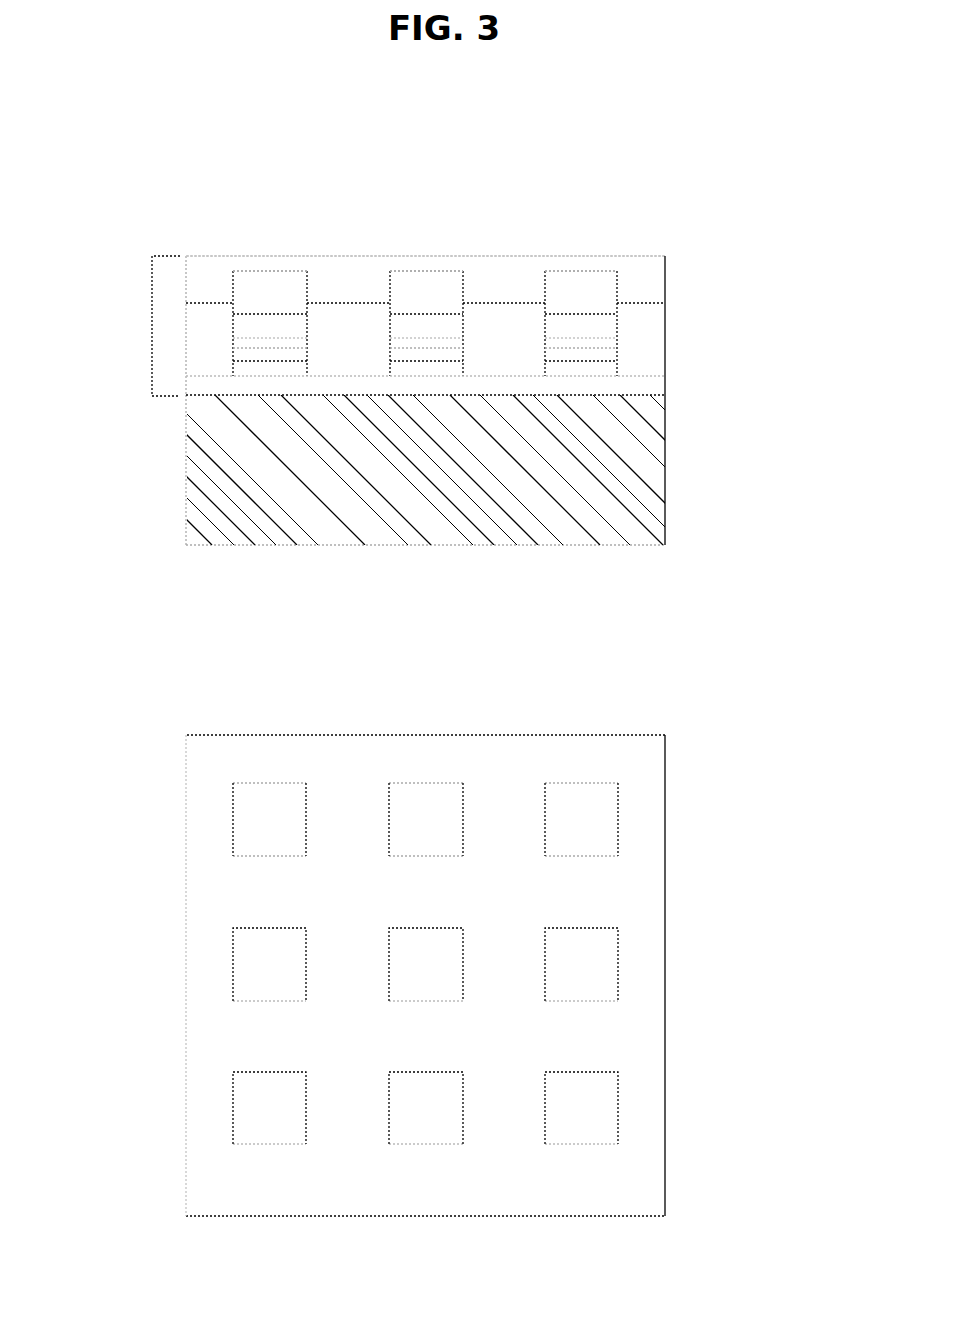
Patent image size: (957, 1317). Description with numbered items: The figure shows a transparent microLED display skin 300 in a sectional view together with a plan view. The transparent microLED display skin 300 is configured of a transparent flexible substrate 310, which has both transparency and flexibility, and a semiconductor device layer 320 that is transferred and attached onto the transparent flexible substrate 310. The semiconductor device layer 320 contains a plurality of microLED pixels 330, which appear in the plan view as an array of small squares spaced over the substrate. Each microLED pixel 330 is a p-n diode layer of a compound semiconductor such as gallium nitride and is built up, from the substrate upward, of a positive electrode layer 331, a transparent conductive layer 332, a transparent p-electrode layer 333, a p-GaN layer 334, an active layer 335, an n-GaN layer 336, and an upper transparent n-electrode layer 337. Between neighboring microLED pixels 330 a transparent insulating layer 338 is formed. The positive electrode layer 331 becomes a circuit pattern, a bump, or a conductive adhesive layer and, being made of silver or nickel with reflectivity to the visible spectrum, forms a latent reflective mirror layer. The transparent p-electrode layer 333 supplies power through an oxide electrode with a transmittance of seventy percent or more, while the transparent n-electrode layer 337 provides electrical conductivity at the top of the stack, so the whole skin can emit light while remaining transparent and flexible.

The transparent microLED display skin 300 is at (413, 220).
The transparent flexible substrate 310 is at (197, 463).
The semiconductor device layer 320 is at (152, 326).
The microLED pixel 330 is at (808, 193).
The positive electrode layer 331 is at (655, 392).
The transparent conductive layer 332 is at (605, 370).
The transparent p-electrode layer 333 is at (607, 353).
The p-GaN layer 334 is at (607, 343).
The active layer 335 is at (607, 323).
The n-GaN layer 336 is at (600, 292).
The upper transparent n-electrode layer 337 is at (637, 267).
The transparent insulating layer 338 is at (653, 369).